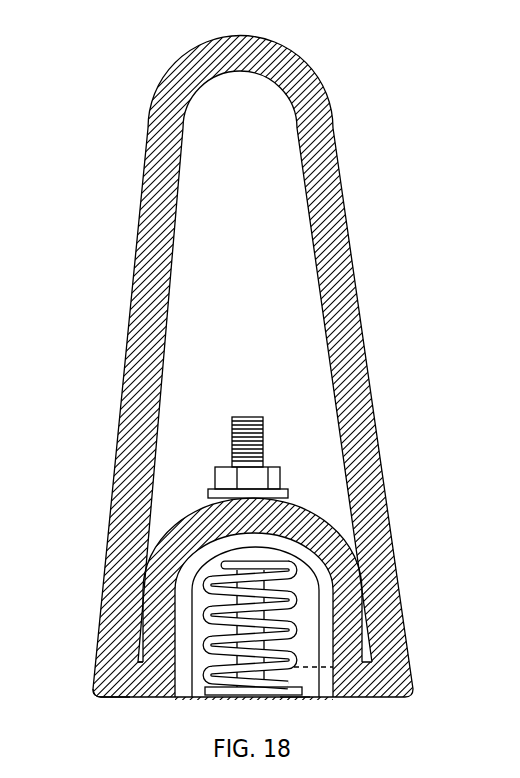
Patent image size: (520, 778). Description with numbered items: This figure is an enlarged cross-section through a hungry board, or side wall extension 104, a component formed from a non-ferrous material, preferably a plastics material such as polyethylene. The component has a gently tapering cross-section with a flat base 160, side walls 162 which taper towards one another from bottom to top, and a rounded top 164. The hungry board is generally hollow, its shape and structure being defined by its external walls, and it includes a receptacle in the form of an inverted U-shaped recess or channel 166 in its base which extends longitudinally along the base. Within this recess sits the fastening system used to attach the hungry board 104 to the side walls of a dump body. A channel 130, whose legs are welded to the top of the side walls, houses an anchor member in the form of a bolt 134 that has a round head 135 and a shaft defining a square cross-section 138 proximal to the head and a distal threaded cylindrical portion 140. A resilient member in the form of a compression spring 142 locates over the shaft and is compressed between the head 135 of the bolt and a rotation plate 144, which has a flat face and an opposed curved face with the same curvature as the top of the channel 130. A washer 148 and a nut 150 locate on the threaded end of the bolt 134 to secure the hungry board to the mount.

The hungry board/side wall extension 104 is at (118, 437).
The channel 130 is at (327, 680).
The bolt 134 is at (245, 675).
The round head 135 is at (294, 698).
The square cross-section 138 is at (270, 620).
The distal threaded cylindrical portion 140 is at (243, 417).
The compression spring 142 is at (323, 543).
The rotation plate 144 is at (267, 562).
The washer 148 is at (208, 494).
The nut 150 is at (273, 468).
The flat base 160 is at (122, 695).
The side walls 162 is at (147, 302).
The rounded top 164 is at (297, 66).
The inverted U-shaped recess or channel 166 is at (164, 600).